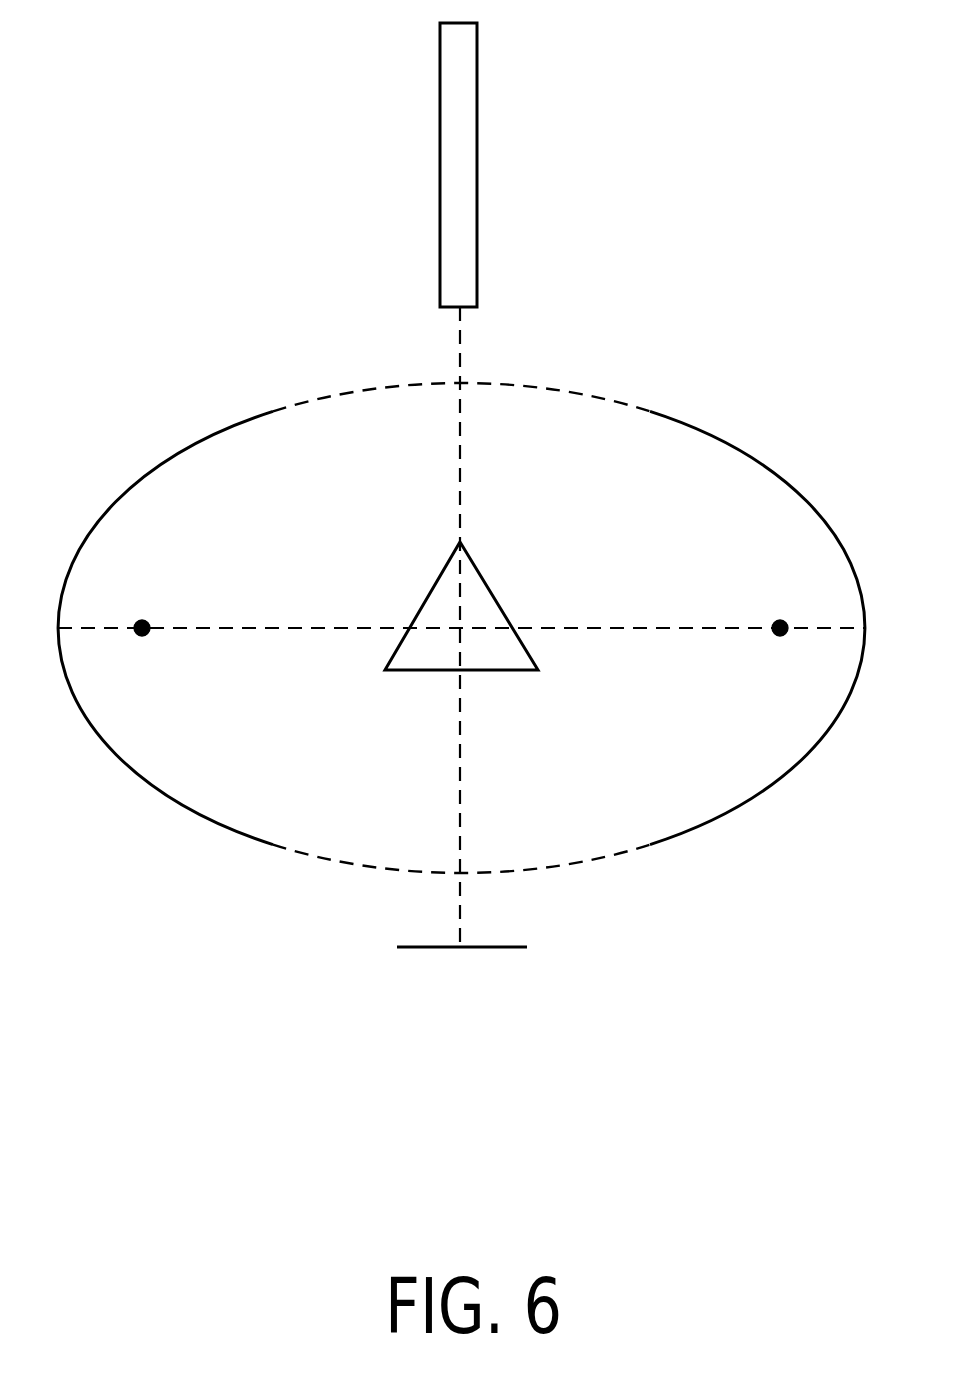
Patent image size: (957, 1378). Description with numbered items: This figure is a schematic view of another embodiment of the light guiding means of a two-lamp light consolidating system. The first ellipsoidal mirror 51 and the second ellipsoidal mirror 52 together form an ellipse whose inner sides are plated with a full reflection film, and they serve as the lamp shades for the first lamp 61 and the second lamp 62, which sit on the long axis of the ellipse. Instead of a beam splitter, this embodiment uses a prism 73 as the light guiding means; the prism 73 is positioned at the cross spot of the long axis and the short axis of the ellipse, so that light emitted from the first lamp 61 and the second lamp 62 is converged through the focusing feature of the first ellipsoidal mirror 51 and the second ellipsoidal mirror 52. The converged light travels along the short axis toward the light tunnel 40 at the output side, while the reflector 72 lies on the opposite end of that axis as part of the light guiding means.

The light tunnel 40 is at (440, 122).
The first ellipsoidal mirror 51 is at (162, 448).
The second ellipsoidal mirror 52 is at (764, 446).
The first lamp 61 is at (142, 620).
The second lamp 62 is at (780, 620).
The reflector 72 is at (502, 948).
The prism 73 is at (500, 672).